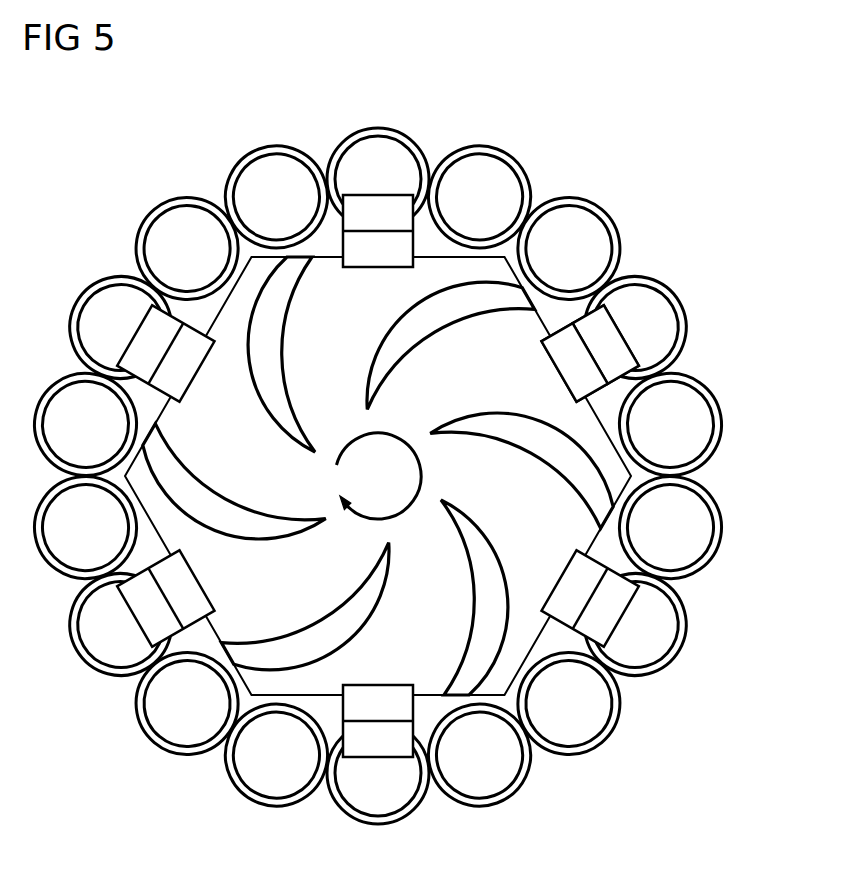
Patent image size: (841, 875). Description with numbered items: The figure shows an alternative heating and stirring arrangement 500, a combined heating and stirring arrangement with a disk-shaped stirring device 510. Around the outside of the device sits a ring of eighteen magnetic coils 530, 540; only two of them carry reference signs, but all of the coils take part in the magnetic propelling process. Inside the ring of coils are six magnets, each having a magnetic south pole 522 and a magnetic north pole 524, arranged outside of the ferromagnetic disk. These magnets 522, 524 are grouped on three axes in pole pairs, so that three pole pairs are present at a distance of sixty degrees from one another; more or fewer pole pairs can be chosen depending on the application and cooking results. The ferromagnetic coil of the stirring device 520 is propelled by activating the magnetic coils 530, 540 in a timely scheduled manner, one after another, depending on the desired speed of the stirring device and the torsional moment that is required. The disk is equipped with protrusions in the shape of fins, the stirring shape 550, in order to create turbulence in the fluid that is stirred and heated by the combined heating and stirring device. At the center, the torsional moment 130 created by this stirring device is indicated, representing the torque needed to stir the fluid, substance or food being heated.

The alternative heating and stirring arrangement 500 is at (103, 238).
The stirring device 510 is at (467, 476).
The ferromagnetic coil of stirring device 520 is at (567, 433).
The magnetic south pole 522 is at (603, 327).
The magnetic north pole 524 is at (590, 375).
The magnetic coil 530 is at (365, 473).
The magnetic coil 540 is at (93, 668).
The stirring shape 550 is at (470, 660).
The torsional moment 130 is at (421, 473).